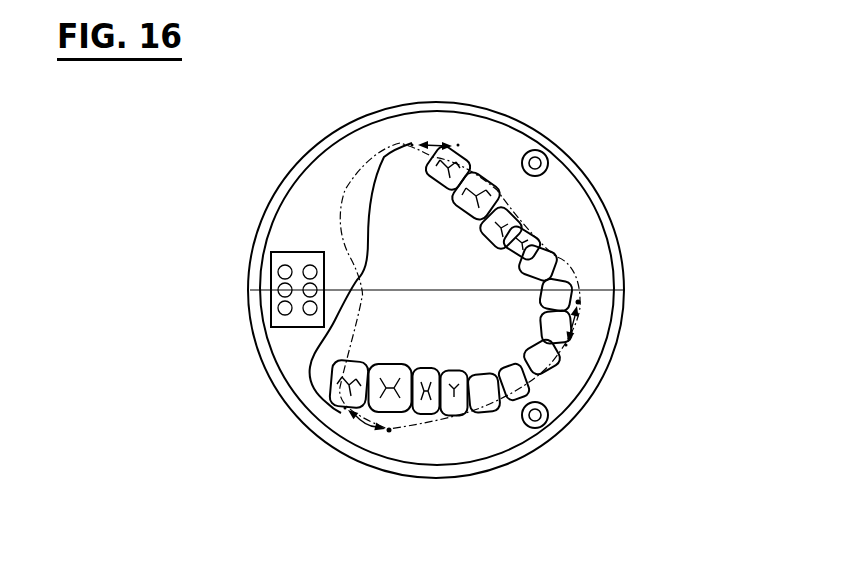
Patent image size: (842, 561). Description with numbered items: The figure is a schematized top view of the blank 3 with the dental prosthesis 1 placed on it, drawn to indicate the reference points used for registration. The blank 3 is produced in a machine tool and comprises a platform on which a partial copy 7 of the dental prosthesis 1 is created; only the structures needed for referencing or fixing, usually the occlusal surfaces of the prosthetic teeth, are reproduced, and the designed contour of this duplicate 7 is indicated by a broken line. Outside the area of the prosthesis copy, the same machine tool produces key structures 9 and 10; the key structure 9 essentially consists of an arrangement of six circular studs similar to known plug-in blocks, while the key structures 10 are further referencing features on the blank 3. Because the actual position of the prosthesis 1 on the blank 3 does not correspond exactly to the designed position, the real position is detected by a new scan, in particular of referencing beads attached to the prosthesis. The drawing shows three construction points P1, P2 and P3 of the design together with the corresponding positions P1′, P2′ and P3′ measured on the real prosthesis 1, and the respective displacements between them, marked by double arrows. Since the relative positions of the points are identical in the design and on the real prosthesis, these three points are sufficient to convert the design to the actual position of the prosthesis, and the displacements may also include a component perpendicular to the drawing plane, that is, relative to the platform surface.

The dental prosthesis 1 is at (563, 253).
The blank 3 is at (655, 266).
The partial copy of dental prosthesis 7 is at (552, 237).
The key structure 9 is at (283, 320).
The key structure 10 is at (540, 160).
The construction point P1 is at (412, 145).
The measured position of first construction point P1′ is at (458, 145).
The construction point P2 is at (578, 302).
The measured position of second construction point P2′ is at (566, 345).
The construction point P3 is at (389, 430).
The measured position of third construction point P3′ is at (345, 408).